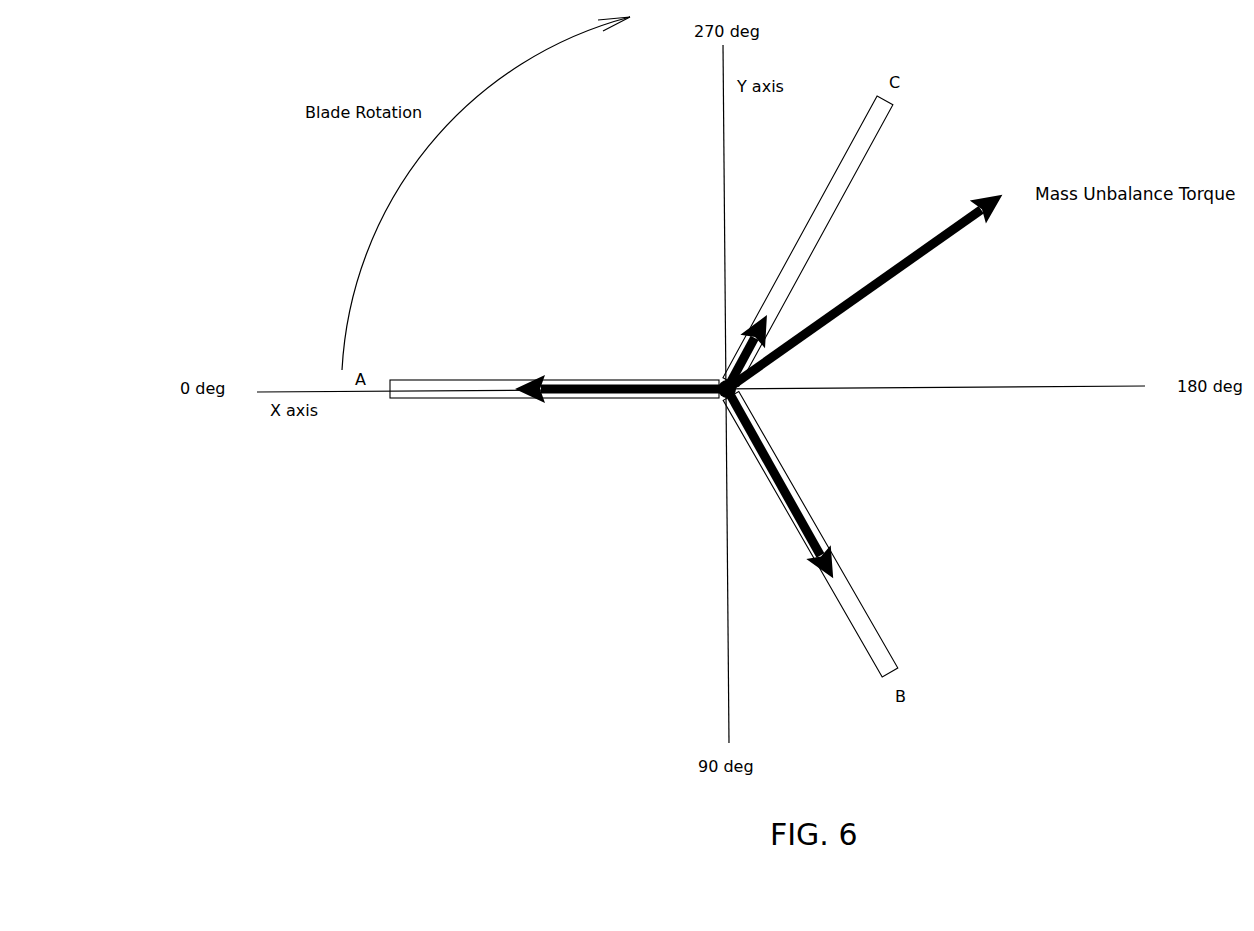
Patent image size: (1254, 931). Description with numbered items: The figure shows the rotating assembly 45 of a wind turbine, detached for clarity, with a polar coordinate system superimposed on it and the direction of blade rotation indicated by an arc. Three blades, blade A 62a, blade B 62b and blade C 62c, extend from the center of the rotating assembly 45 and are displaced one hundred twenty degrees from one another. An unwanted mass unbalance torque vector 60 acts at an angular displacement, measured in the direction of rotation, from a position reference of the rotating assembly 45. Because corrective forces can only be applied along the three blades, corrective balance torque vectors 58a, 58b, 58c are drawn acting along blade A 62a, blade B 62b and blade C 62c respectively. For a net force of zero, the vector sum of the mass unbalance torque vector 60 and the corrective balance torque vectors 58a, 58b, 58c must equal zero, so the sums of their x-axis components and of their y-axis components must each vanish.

The rotating assembly 45 is at (710, 415).
The corrective balance torque vector 58a is at (592, 390).
The corrective balance torque vector 58b is at (767, 447).
The corrective balance torque vector 58c is at (735, 345).
The mass unbalance torque vector 60 is at (823, 325).
The blade A 62a is at (483, 382).
The blade B 62b is at (873, 662).
The blade C 62c is at (813, 225).